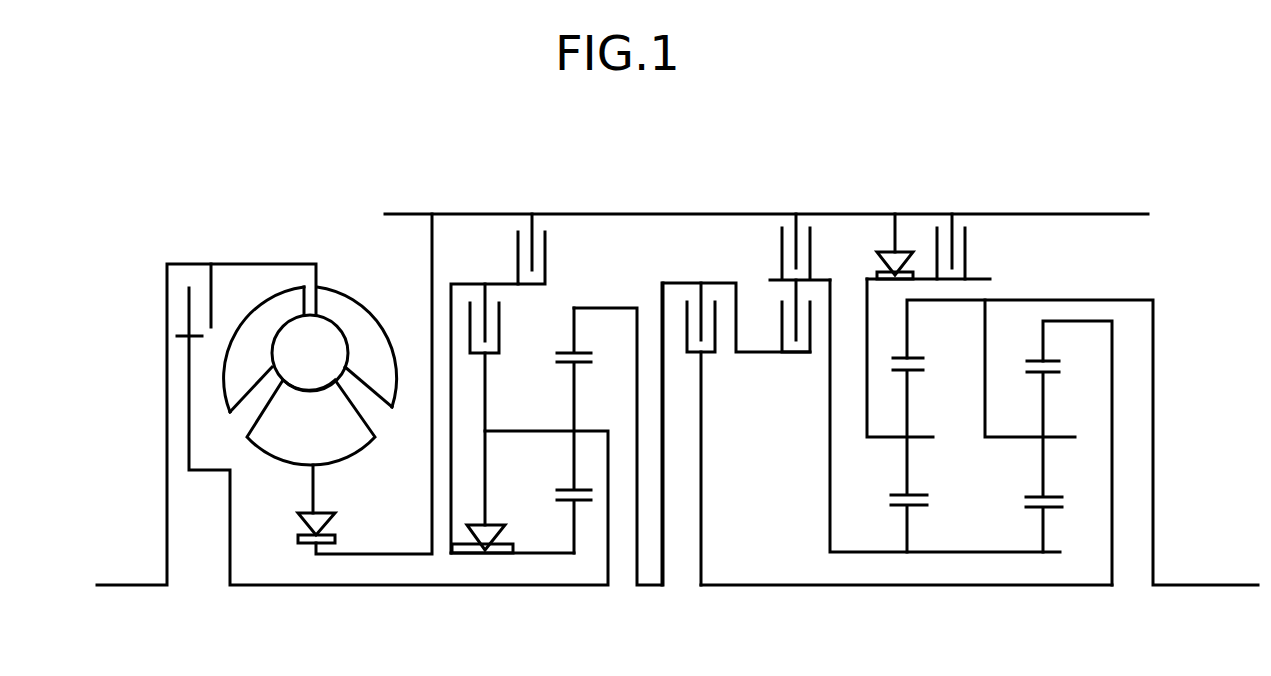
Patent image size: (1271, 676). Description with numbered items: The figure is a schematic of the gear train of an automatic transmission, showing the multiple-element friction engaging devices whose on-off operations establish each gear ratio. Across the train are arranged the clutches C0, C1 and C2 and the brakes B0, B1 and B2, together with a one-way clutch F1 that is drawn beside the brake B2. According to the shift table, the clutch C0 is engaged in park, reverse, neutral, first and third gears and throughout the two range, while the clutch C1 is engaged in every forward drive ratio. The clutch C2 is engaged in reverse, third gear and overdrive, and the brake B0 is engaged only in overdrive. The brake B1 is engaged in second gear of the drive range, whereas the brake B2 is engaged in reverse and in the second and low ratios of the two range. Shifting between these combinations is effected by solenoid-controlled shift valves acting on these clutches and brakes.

The clutch C0 is at (470, 277).
The brake B0 is at (550, 250).
The clutch C1 is at (700, 278).
The brake B1 is at (772, 253).
The clutch C2 is at (813, 300).
The one-way clutch F1 is at (905, 247).
The brake B2 is at (972, 227).